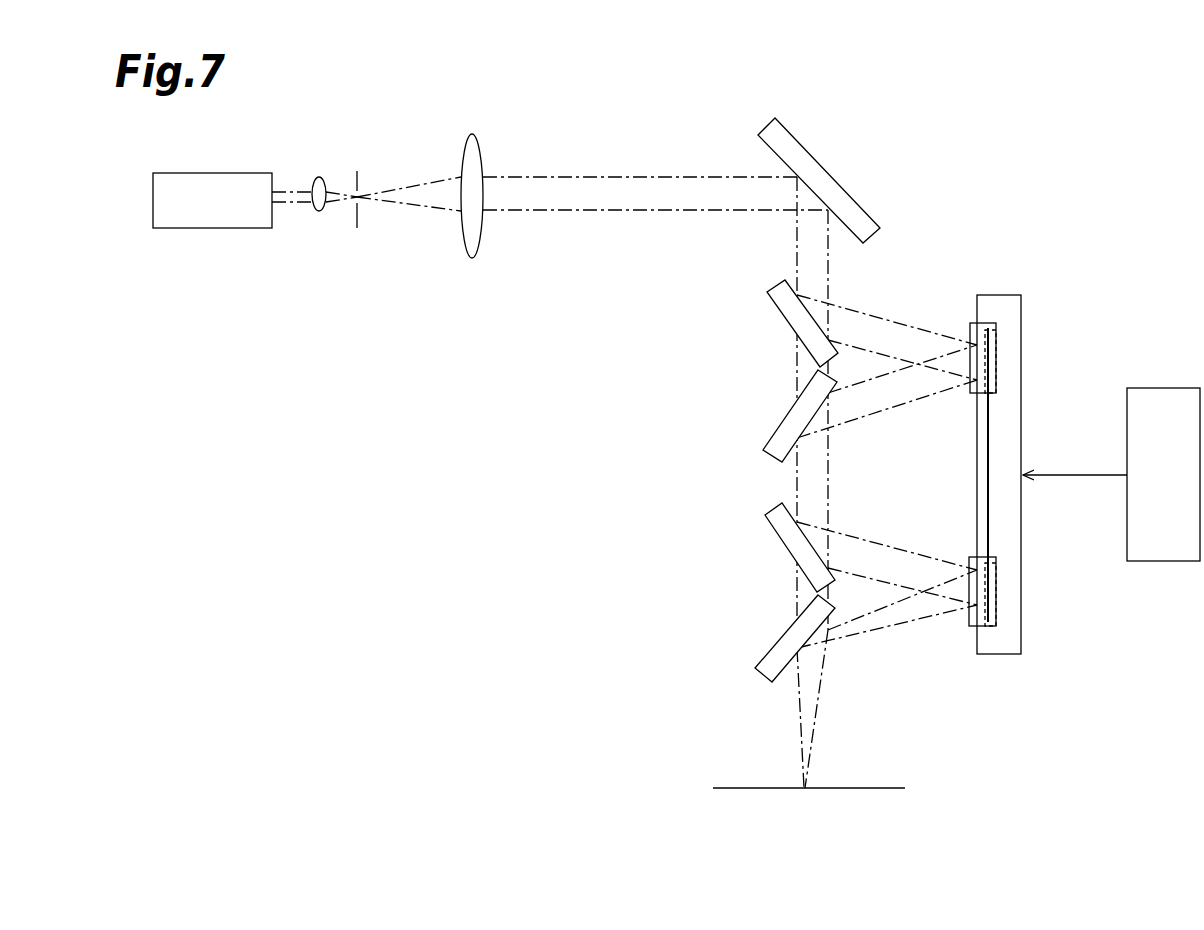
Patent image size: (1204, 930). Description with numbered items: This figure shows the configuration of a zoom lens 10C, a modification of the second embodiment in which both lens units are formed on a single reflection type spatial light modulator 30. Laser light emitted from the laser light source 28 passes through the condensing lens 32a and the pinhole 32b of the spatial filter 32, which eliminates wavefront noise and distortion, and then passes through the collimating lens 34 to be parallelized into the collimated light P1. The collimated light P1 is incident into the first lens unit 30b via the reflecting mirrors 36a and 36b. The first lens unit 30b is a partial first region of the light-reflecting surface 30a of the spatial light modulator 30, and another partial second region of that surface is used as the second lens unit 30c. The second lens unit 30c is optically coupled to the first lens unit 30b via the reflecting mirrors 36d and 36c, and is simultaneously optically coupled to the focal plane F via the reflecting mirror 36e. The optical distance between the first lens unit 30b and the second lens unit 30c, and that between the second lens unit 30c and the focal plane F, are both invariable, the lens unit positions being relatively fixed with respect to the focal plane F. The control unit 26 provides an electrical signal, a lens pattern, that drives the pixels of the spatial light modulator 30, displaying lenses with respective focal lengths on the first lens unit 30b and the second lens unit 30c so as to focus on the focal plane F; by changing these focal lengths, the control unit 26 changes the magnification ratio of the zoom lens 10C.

The zoom lens 10C is at (1002, 105).
The collimated light P1 is at (668, 176).
The laser light source 28 is at (209, 230).
The spatial filter 32 is at (354, 235).
The condensing lens 32a is at (319, 212).
The pinhole 32b is at (383, 219).
The collimating lens 34 is at (478, 245).
The reflecting mirror 36a is at (787, 133).
The reflecting mirror 36b is at (778, 317).
The reflecting mirror 36c is at (787, 417).
The reflecting mirror 36d is at (778, 545).
The reflecting mirror 36e is at (774, 648).
The reflection type spatial light modulator 30 is at (994, 474).
The light-reflecting surface 30a is at (980, 458).
The first lens unit 30b is at (997, 330).
The second lens unit 30c is at (997, 563).
The control unit 26 is at (1177, 565).
The focal plane F is at (882, 788).